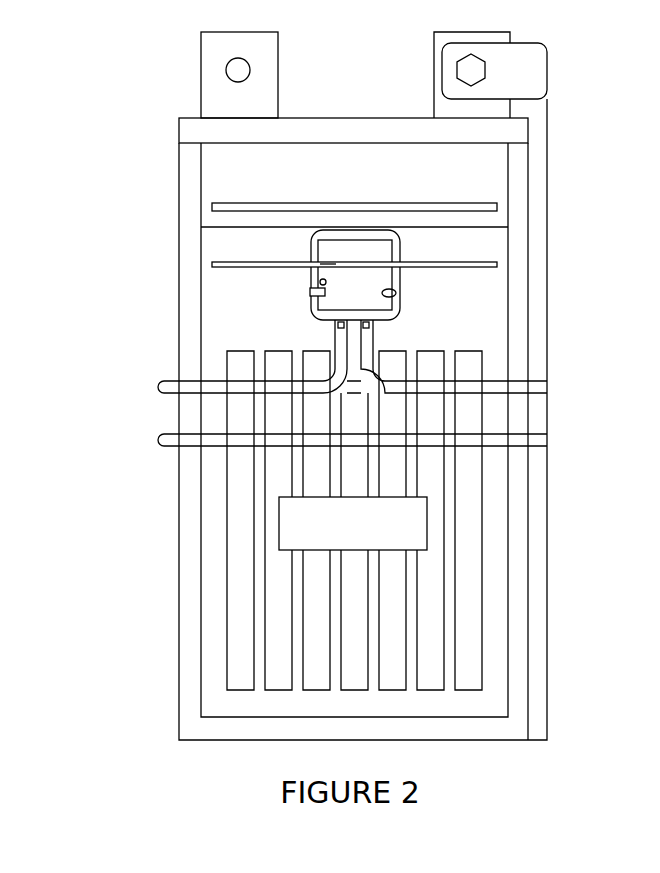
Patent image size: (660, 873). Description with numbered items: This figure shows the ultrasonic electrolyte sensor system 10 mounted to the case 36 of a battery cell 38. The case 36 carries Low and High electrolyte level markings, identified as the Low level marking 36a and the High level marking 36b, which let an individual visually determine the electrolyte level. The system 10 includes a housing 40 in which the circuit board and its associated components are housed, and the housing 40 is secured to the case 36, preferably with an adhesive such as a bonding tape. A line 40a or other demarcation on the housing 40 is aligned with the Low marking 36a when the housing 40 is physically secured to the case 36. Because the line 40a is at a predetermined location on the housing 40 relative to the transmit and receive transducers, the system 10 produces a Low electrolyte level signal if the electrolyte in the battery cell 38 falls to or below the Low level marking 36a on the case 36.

The system 10 is at (405, 282).
The case 36 is at (218, 640).
The Low electrolyte level marking 36a is at (212, 264).
The High electrolyte level marking 36b is at (215, 217).
The battery cell 38 is at (155, 208).
The housing 40 is at (335, 263).
The line 40a is at (300, 294).